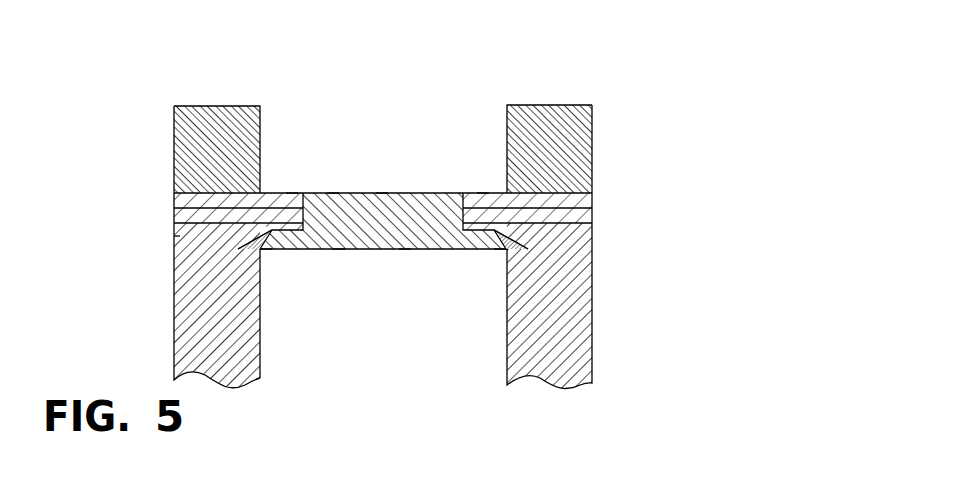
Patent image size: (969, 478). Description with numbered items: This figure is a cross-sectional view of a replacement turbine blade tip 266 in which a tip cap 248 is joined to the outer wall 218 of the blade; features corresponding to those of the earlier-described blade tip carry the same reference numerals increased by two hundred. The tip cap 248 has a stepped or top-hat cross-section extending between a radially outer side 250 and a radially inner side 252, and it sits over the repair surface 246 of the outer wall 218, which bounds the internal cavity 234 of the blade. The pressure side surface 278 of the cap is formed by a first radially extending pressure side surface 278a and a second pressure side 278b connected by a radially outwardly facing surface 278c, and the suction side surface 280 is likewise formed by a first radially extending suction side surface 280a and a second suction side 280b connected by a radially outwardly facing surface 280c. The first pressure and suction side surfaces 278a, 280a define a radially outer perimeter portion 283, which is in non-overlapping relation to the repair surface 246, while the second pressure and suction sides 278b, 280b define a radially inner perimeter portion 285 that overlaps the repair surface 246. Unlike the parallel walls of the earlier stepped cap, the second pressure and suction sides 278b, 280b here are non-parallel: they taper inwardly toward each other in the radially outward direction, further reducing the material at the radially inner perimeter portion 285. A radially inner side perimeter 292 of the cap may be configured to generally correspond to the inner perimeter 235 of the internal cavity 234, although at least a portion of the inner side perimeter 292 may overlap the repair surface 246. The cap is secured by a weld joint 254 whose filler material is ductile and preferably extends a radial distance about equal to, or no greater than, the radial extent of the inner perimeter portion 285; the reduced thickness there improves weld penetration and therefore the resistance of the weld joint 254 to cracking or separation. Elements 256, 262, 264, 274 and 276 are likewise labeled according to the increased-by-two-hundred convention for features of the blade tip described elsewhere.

The outer wall 218 is at (176, 330).
The internal cavity 234 is at (322, 305).
The inner perimeter of the internal cavity 235 is at (262, 331).
The repair surface 246 is at (185, 243).
The tip cap 248 is at (415, 187).
The radially outer side 250 is at (382, 193).
The radially inner side 252 is at (405, 249).
The weld joint 254 is at (258, 236).
The second edge of cover plate 256 is at (483, 193).
The upper portion of first wall 262 is at (176, 125).
The upper portion of second wall 264 is at (557, 105).
The blade tip 266 is at (602, 107).
The first edge of cover plate 274 is at (333, 193).
The lower surface portion 276 is at (339, 249).
The pressure side surface 278 is at (259, 192).
The first radially extending pressure side surface 278a is at (300, 198).
The second pressure side 278b is at (258, 254).
The radially outwardly facing surface 278c is at (300, 216).
The suction side surface 280 is at (507, 192).
The first radially extending suction side surface 280a is at (470, 205).
The second suction side 280b is at (506, 248).
The radially outwardly facing surface 280c is at (470, 216).
The radially outer perimeter portion 283 is at (292, 193).
The radially inner perimeter portion 285 is at (520, 234).
The radially inner side perimeter 292 is at (507, 258).